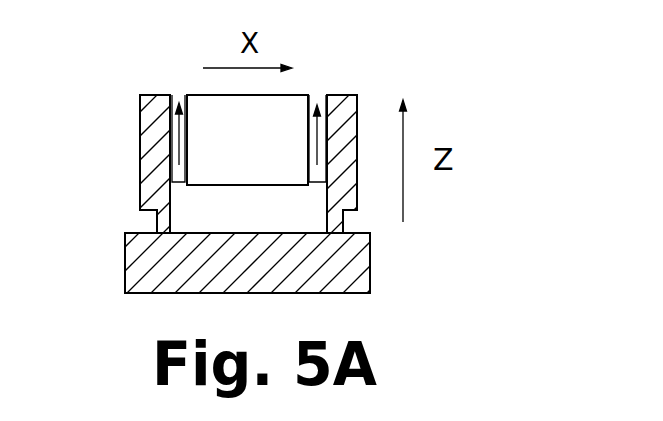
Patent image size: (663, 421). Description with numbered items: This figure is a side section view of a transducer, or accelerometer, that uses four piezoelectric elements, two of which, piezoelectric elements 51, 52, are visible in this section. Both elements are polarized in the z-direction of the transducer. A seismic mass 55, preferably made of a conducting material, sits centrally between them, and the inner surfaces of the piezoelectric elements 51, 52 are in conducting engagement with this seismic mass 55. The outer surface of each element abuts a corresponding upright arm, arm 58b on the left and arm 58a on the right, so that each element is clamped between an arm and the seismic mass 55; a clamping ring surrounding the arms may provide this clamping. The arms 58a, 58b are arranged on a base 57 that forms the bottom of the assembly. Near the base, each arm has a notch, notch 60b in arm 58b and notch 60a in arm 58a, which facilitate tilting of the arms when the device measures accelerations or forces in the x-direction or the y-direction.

The piezoelectric element 51 is at (318, 97).
The piezoelectric element 52 is at (177, 91).
The seismic mass 55 is at (234, 160).
The base 57 is at (352, 267).
The arm 58a is at (343, 124).
The arm 58b is at (146, 147).
The notch 60a is at (351, 223).
The notch 60b is at (142, 220).